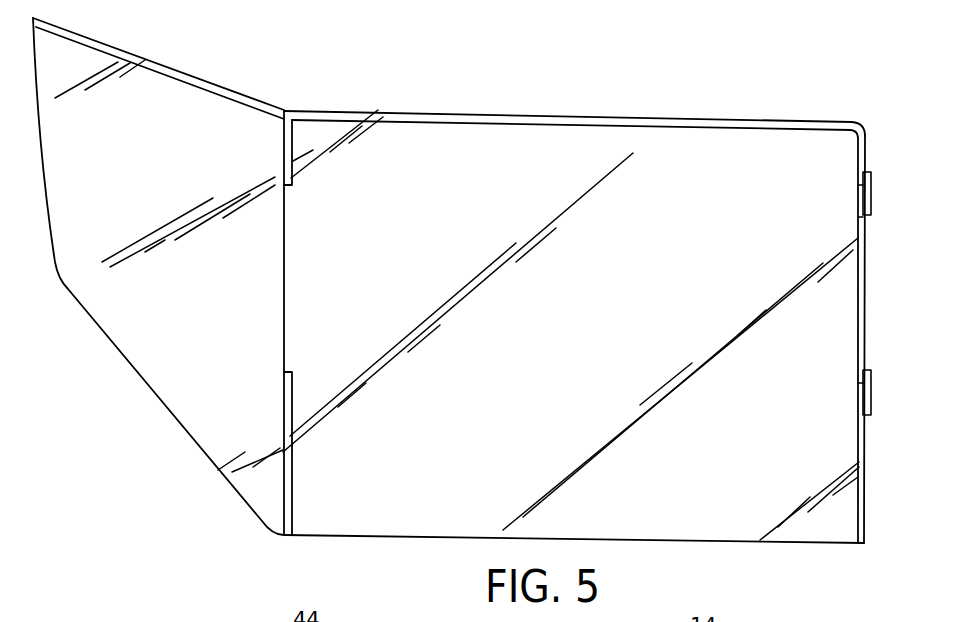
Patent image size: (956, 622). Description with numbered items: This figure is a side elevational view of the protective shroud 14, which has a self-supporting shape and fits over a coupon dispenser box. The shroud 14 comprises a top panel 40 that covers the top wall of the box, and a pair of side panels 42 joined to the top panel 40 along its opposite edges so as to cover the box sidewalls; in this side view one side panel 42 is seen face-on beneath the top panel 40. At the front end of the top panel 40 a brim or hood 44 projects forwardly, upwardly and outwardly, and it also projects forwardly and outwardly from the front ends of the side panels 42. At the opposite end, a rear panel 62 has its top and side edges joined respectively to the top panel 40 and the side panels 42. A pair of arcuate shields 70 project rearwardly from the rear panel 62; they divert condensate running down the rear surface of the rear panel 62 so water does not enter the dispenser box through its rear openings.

The protective shroud 14 is at (614, 68).
The top panel 40 is at (370, 112).
The side panel 42 is at (400, 541).
The brim 44 is at (222, 83).
The rear panel 62 is at (865, 310).
The arcuate shield 70 is at (872, 193).